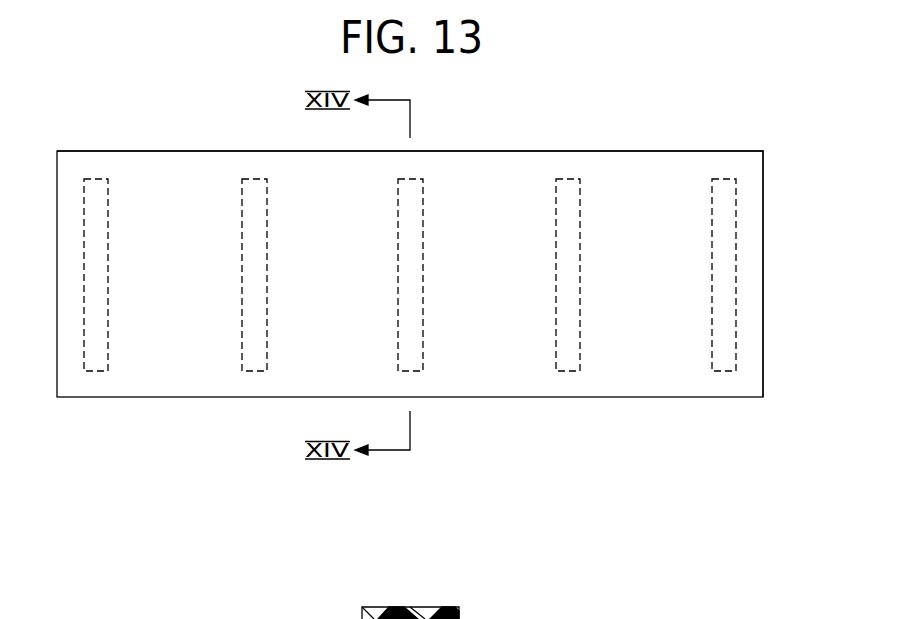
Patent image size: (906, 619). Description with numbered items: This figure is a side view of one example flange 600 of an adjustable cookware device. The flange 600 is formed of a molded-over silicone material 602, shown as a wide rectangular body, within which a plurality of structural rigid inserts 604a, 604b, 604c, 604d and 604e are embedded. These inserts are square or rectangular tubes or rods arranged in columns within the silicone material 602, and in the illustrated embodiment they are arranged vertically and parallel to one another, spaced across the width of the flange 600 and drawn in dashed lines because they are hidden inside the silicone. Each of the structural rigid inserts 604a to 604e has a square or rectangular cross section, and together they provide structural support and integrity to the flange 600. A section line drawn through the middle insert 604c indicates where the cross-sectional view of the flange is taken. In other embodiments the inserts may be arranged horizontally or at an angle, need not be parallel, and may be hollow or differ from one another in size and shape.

The flange 600 is at (545, 106).
The silicone material 602 is at (731, 162).
The structural rigid insert 604a is at (96, 371).
The structural rigid insert 604b is at (254, 371).
The structural rigid insert 604c is at (410, 371).
The structural rigid insert 604d is at (567, 371).
The structural rigid insert 604e is at (724, 371).